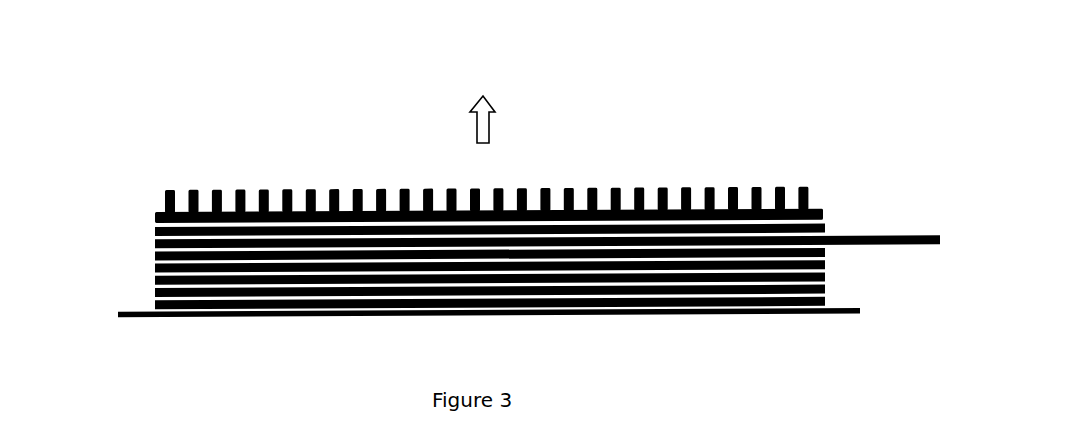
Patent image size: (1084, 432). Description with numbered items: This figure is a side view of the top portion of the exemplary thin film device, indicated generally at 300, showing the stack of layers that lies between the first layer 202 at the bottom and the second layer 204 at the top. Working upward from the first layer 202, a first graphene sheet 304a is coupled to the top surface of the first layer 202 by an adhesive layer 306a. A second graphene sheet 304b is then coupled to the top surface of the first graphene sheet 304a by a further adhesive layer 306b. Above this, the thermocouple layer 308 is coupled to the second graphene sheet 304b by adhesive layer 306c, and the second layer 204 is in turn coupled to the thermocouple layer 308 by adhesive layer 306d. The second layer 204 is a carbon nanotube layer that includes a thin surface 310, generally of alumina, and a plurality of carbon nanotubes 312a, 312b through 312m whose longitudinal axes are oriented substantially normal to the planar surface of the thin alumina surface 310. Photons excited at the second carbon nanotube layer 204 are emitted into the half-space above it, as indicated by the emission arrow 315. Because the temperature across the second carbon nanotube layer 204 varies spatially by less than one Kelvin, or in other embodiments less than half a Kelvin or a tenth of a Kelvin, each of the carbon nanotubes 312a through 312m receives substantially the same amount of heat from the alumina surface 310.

The layered structure 300 is at (208, 40).
The first layer 202 is at (847, 315).
The second carbon nanotube layer 204 is at (835, 197).
The thermocouple layer 308 is at (918, 235).
The thin alumina surface 310 is at (153, 213).
The carbon nanotube 312a is at (165, 192).
The carbon nanotube 312b is at (189, 190).
The carbon nanotube 312m is at (810, 188).
The adhesive layer 306a is at (155, 303).
The adhesive layer 306b is at (155, 280).
The adhesive layer 306c is at (155, 257).
The adhesive layer 306d is at (155, 232).
The first graphene sheet 304a is at (283, 292).
The second graphene sheet 304b is at (260, 265).
The emission arrow 315 is at (490, 123).